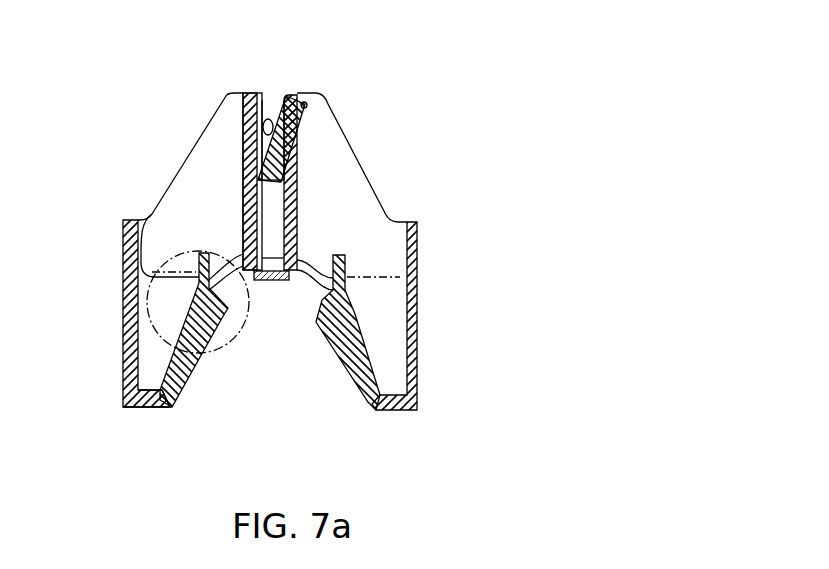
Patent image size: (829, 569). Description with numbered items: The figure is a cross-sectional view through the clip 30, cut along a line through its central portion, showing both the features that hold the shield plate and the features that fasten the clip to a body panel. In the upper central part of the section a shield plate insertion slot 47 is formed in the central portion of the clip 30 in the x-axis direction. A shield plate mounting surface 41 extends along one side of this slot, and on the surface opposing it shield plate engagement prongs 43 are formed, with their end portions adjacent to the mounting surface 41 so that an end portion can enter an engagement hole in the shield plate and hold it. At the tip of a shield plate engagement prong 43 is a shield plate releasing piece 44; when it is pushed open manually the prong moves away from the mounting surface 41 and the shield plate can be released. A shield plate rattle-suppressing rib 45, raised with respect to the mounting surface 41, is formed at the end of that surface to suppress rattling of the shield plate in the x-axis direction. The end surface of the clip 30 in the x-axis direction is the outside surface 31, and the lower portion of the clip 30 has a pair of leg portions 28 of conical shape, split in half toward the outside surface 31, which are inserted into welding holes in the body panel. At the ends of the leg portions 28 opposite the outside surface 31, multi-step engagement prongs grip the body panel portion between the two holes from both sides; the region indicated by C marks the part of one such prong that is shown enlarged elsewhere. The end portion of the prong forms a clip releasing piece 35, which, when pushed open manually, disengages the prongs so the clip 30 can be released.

The leg portions 28 is at (123, 363).
The clip 30 is at (395, 157).
The outside surface 31 is at (123, 249).
The clip releasing piece 35 is at (199, 253).
The shield plate mounting surface 41 is at (266, 122).
The shield plate engagement prongs 43 is at (283, 168).
The shield plate releasing piece 44 is at (307, 106).
The shield plate rattle-suppressing rib 45 is at (270, 112).
The shield plate insertion slot 47 is at (279, 110).
The portion C is at (237, 345).